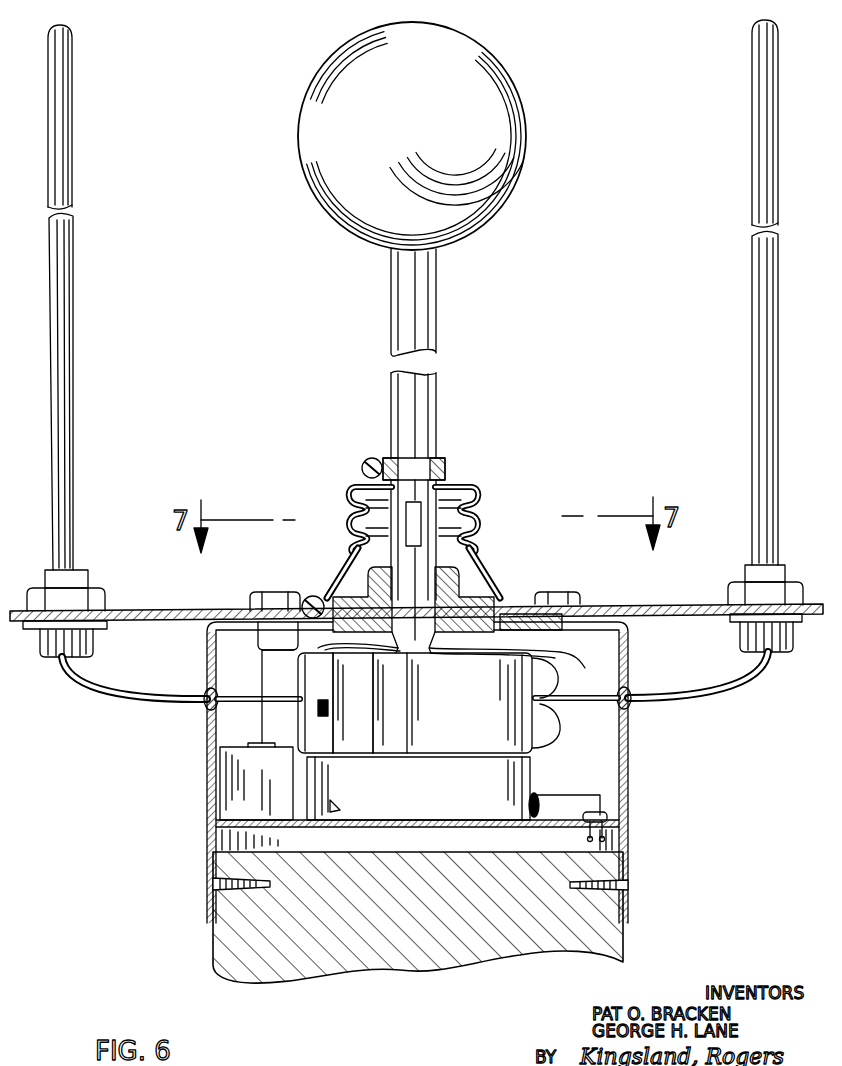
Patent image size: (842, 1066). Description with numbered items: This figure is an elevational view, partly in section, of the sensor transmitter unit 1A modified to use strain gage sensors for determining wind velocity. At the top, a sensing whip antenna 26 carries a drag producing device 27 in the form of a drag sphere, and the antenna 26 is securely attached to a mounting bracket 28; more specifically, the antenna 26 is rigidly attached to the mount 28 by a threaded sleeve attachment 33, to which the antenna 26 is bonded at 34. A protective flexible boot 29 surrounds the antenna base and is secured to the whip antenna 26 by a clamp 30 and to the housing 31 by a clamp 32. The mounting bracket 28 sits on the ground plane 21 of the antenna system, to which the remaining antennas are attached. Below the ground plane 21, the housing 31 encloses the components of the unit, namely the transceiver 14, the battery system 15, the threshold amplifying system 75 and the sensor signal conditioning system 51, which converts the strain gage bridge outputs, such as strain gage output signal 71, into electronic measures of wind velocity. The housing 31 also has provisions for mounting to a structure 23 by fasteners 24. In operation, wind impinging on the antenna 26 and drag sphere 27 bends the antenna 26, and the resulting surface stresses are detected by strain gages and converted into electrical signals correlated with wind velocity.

The drag producing device 27 is at (513, 87).
The sensing whip antenna 26 is at (433, 303).
The clamp 30 is at (366, 460).
The protective flexible boot 29 is at (476, 487).
The threaded sleeve attachment 33 is at (362, 558).
The bond 34 is at (463, 567).
The clamp 32 is at (313, 596).
The mounting bracket 28 is at (483, 587).
The ground plane 21 is at (656, 604).
The housing 31 is at (627, 758).
The transceiver 14 is at (429, 703).
The sensor signal conditioning system 51 is at (358, 694).
The threshold amplifying system 75 is at (398, 694).
The battery system 15 is at (364, 797).
The strain gage output signal 71 is at (243, 745).
The structure 23 is at (380, 972).
The fasteners 24 is at (628, 886).
The sensor transmitter unit 1A is at (652, 797).